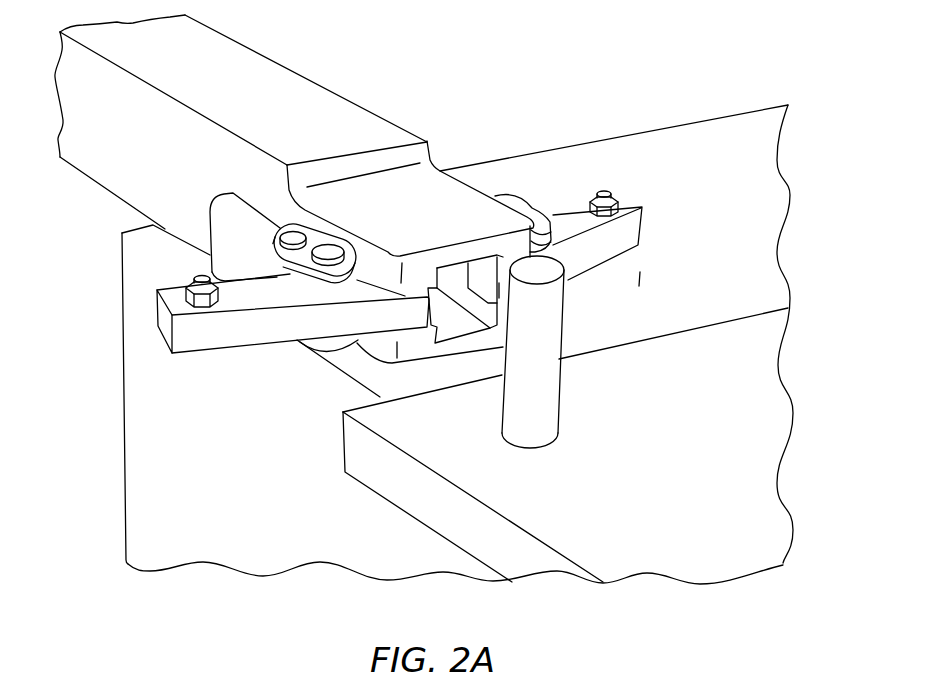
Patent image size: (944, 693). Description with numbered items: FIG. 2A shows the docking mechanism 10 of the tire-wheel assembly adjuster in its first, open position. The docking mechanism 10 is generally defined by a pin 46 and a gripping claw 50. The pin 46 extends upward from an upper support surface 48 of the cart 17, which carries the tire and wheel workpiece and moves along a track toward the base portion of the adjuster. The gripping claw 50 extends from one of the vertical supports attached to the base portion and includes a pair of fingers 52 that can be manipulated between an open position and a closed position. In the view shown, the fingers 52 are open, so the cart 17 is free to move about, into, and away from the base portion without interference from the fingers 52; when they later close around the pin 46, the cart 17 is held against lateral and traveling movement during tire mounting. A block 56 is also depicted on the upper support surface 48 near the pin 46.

The docking mechanism 10 is at (516, 80).
The cart 17 is at (748, 247).
The pin 46 is at (553, 308).
The upper support surface 48 is at (676, 462).
The gripping claw 50 is at (368, 103).
The fingers 52 is at (232, 335).
The slab 56 is at (373, 493).